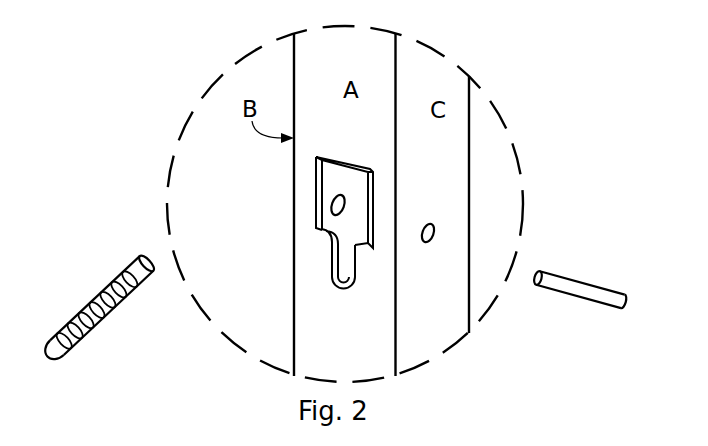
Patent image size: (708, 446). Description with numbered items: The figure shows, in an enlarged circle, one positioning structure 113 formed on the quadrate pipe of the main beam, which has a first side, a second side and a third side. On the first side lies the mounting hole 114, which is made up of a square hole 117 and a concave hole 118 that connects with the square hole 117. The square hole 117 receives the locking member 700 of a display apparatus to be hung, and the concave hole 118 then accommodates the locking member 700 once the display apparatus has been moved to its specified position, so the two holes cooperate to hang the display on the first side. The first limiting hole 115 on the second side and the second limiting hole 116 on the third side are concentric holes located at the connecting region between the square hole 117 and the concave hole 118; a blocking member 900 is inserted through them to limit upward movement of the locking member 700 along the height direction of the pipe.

The positioning structure 113 is at (428, 34).
The mounting hole 114 is at (280, 223).
The first limiting hole 115 is at (334, 197).
The second limiting hole 116 is at (433, 238).
The square hole 117 is at (352, 222).
The concave hole 118 is at (345, 263).
The locking member 700 is at (93, 333).
The blocking member 900 is at (558, 283).